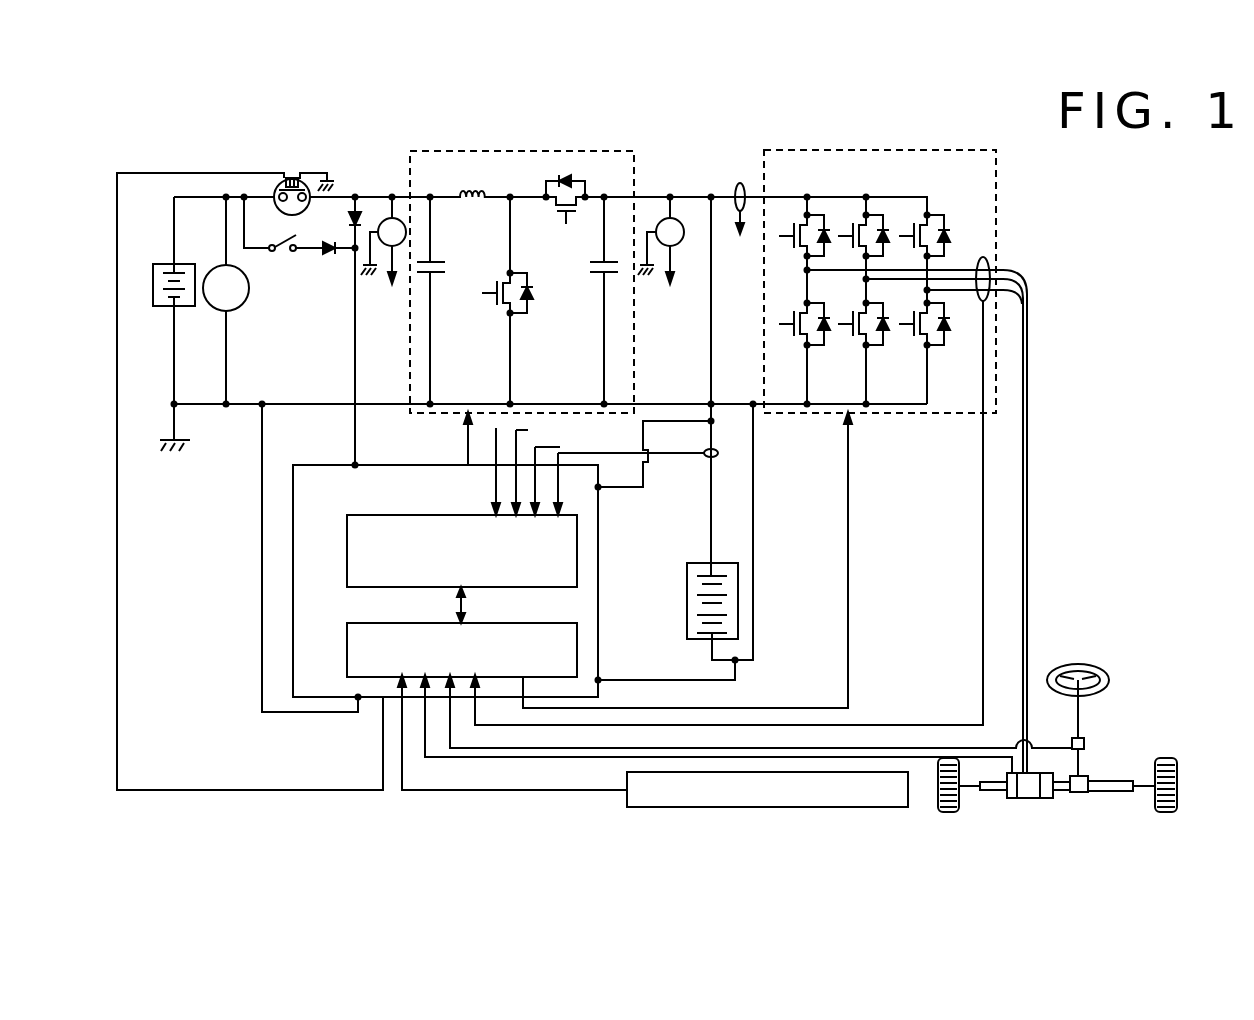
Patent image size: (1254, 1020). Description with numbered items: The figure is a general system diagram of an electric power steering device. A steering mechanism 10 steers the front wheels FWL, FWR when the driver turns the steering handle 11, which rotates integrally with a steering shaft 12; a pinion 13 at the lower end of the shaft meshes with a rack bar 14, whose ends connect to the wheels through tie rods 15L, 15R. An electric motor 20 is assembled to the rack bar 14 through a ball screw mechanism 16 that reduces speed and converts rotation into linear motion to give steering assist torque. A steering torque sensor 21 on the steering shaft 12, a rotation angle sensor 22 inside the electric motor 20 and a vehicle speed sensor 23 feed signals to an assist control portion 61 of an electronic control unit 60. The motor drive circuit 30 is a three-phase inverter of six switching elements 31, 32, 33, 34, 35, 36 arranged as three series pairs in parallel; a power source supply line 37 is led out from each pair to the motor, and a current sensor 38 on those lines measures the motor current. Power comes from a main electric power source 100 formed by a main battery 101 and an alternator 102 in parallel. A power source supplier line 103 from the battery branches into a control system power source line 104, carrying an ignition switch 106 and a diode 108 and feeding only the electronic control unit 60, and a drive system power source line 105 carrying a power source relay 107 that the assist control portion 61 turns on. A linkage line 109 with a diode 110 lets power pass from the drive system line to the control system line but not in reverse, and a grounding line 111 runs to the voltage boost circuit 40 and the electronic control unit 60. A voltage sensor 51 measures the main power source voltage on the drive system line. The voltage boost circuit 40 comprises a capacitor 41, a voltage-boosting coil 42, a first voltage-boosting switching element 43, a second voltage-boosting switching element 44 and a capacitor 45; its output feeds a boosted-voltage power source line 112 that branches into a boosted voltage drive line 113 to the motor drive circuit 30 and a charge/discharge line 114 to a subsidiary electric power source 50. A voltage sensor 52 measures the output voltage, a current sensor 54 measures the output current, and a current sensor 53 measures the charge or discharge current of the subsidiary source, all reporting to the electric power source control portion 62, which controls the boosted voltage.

The steering mechanism 10 is at (1154, 702).
The steering handle 11 is at (1090, 664).
The steering shaft 12 is at (1082, 708).
The pinion 13 is at (1079, 793).
The rack bar 14 is at (1128, 778).
The tie rod 15L is at (970, 790).
The tie rod 15R is at (1143, 790).
The left front wheel FWL is at (948, 813).
The right front wheel FWR is at (1165, 813).
The ball screw mechanism 16 is at (1047, 799).
The electric motor 20 is at (1028, 800).
The steering torque sensor 21 is at (1086, 745).
The rotation angle sensor 22 is at (1010, 798).
The vehicle speed sensor 23 is at (850, 808).
The motor drive circuit 30 is at (978, 150).
The first switching element 31 is at (803, 214).
The second switching element 32 is at (804, 346).
The third switching element 33 is at (862, 214).
The fourth switching element 34 is at (863, 346).
The fifth switching element 35 is at (923, 214).
The sixth switching element 36 is at (923, 346).
The power source supply line 37 is at (1028, 386).
The current sensor 38 is at (990, 265).
The voltage boost circuit 40 is at (612, 150).
The capacitor 41 is at (443, 278).
The voltage-boosting coil 42 is at (472, 204).
The first voltage-boosting switching element 43 is at (500, 311).
The second voltage-boosting switching element 44 is at (563, 222).
The capacitor 45 is at (603, 280).
The subsidiary electric power source 50 is at (686, 603).
The voltage sensor 51 is at (392, 216).
The voltage sensor 52 is at (683, 237).
The current sensor 53 is at (717, 451).
The current sensor 54 is at (741, 184).
The electronic control unit 60 is at (425, 455).
The assist control portion 61 is at (578, 637).
The electric power source control portion 62 is at (578, 550).
The main electric power source 100 is at (199, 408).
The main battery 101 is at (185, 307).
The alternator 102 is at (243, 310).
The power source supplier line 103 is at (200, 197).
The control system power source line 104 is at (275, 252).
The drive system power source line 105 is at (283, 180).
The ignition switch 106 is at (294, 242).
The power source relay 107 is at (262, 210).
The diode 108 is at (330, 257).
The linkage line 109 is at (353, 192).
The diode 110 is at (349, 224).
The grounding line 111 is at (244, 408).
The boosted-voltage power source line 112 is at (627, 196).
The boosted voltage drive line 113 is at (713, 196).
The charge/discharge line 114 is at (713, 322).